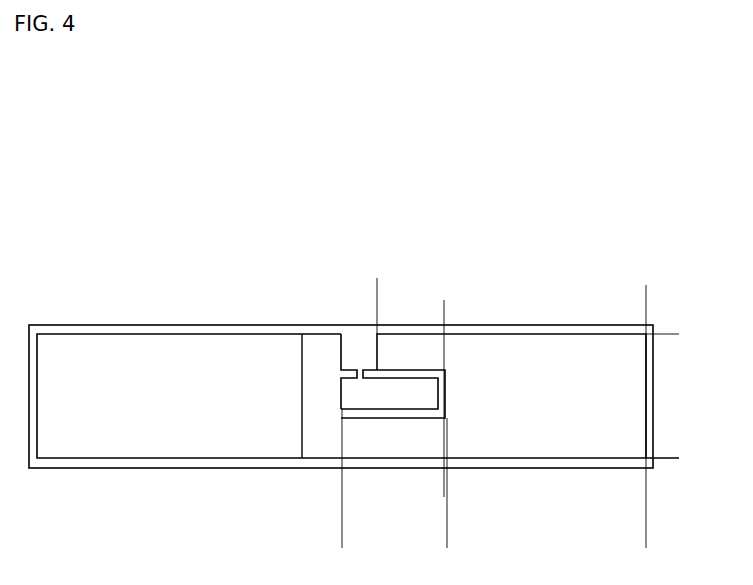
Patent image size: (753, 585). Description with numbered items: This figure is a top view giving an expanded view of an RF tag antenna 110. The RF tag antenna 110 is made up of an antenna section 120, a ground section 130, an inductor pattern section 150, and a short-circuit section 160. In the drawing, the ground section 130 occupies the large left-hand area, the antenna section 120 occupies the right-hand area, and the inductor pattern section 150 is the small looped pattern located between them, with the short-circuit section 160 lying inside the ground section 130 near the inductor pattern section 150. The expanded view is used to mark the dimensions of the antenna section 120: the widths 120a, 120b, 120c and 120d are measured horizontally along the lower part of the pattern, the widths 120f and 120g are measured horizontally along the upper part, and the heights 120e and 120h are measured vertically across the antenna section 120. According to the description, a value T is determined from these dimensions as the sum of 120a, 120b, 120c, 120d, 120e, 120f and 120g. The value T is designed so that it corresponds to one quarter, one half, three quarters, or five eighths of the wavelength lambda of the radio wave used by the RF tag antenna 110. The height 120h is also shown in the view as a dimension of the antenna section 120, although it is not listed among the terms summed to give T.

The RF tag antenna 110 is at (658, 126).
The antenna section 120 is at (629, 356).
The ground section 130 is at (124, 347).
The inductor pattern section 150 is at (368, 370).
The short-circuit section 160 is at (316, 343).
The dimension 120a is at (444, 354).
The dimension 120b is at (444, 493).
The dimension 120c is at (447, 519).
The dimension 120d is at (646, 545).
The dimension 120e is at (671, 334).
The dimension 120f is at (646, 285).
The dimension 120g is at (444, 312).
The dimension 120h is at (486, 334).